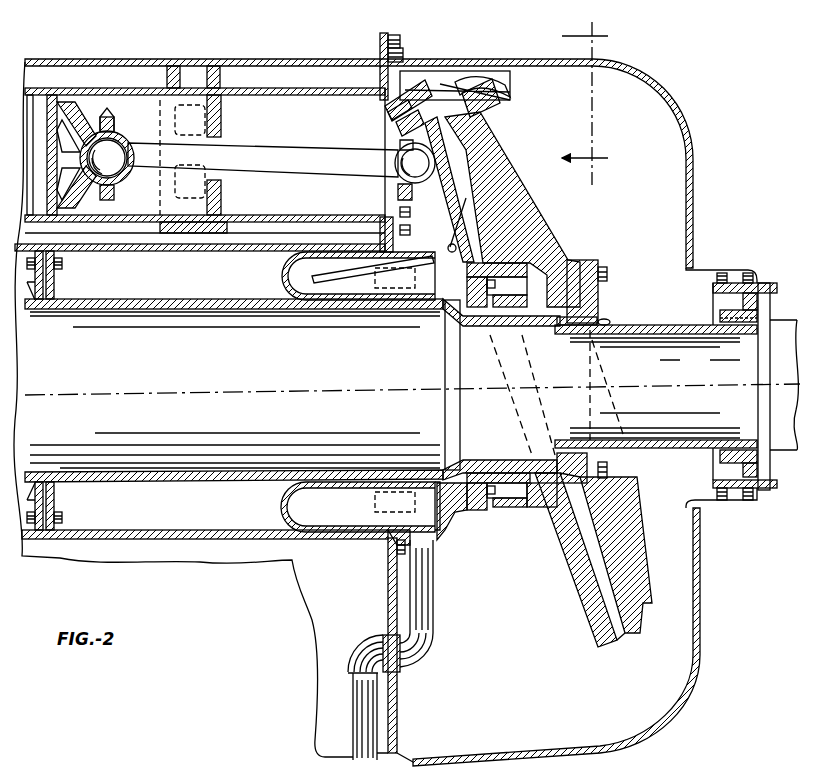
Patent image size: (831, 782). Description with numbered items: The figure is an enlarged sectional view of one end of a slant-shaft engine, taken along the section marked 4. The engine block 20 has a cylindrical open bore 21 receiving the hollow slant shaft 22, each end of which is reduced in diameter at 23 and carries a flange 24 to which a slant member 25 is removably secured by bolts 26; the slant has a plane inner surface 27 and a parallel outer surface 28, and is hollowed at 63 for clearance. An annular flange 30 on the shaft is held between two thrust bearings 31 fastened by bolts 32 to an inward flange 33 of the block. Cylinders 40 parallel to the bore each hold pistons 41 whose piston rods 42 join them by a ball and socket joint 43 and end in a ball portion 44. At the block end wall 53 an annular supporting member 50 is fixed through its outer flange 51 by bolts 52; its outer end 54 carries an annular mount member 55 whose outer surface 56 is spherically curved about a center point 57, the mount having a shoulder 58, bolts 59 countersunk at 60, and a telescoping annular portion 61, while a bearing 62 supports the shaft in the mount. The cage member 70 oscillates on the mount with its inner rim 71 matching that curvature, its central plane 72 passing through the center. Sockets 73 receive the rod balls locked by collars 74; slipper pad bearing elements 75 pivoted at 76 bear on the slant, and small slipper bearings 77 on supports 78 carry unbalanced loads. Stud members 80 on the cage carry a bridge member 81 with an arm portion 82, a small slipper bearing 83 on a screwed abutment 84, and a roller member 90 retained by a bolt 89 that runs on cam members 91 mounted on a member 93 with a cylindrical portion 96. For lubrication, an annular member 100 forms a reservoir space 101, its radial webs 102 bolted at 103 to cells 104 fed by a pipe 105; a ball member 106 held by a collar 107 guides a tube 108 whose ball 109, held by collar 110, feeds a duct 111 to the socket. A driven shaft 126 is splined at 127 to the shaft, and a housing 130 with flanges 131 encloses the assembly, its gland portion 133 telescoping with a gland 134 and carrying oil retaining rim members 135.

The section line 4- 4 is at (585, 102).
The engine block 20 is at (77, 54).
The open bore 21 is at (172, 523).
The slant shaft 22 is at (213, 303).
The reduced-diameter shaft end 23 is at (493, 340).
The flange 24 is at (588, 270).
The slant member 25 is at (548, 222).
The bolts 26 is at (607, 274).
The inner surface 27 is at (622, 638).
The outer surface 28 is at (646, 606).
The annular flange 30 is at (55, 290).
The thrust bearings 31 is at (60, 297).
The bolts 32 is at (62, 264).
The annular flange 33 is at (62, 517).
The cylinders 40 is at (277, 87).
The pistons 41 is at (53, 100).
The piston rod 42 is at (276, 143).
The ball and socket joint 43 is at (128, 128).
The ball portion 44 is at (398, 172).
The annular supporting member 50 is at (457, 503).
The outer flange 51 is at (395, 542).
The bolts 52 is at (397, 555).
The end walls 53 is at (398, 690).
The outer end 54 is at (467, 483).
The annular mount member 55 is at (510, 508).
The outer surface 56 is at (503, 508).
The center point 57 is at (517, 387).
The annular shoulder 58 is at (478, 480).
The bolts 59 is at (482, 505).
The countersink 60 is at (540, 505).
The annular portion 61 is at (460, 498).
The bearing 62 is at (510, 317).
The hollowed-out portion 63 is at (553, 262).
The cage member 70 is at (573, 573).
The inner rim 71 is at (557, 532).
The central plane 72 is at (475, 366).
The sockets 73 is at (470, 165).
The collars 74 is at (400, 142).
The slipper pad bearing elements 75 is at (480, 187).
The pivotal mounting 76 is at (487, 143).
The small slipper bearings 77 is at (493, 205).
The supports 78 is at (398, 192).
The stud members 80 is at (398, 124).
The bridge member 81 is at (467, 98).
The right angled arm portion 82 is at (497, 116).
The small slipper bearing 83 is at (500, 85).
The screwed abutment 84 is at (500, 117).
The bolt 89 is at (403, 63).
The roller member 90 is at (420, 88).
The cam members 91 is at (497, 72).
The member 93 is at (387, 77).
The cylindrical portion 96 is at (380, 85).
The annular member 100 is at (300, 268).
The annular space 101 is at (307, 283).
The radial webs 102 is at (377, 483).
The bolts 103 is at (372, 510).
The cells 104 is at (413, 297).
The pipe 105 is at (432, 606).
The ball member 106 is at (417, 295).
The collar 107 is at (450, 317).
The tube 108 is at (340, 293).
The ball 109 is at (450, 245).
The collar 110 is at (422, 212).
The duct 111 is at (520, 217).
The shaft 126 is at (667, 335).
The spline 127 is at (607, 320).
The housing 130 is at (670, 100).
The flanges 131 is at (393, 36).
The gland portion 133 is at (730, 510).
The gland 134 is at (777, 490).
The oil retaining rim members 135 is at (733, 267).